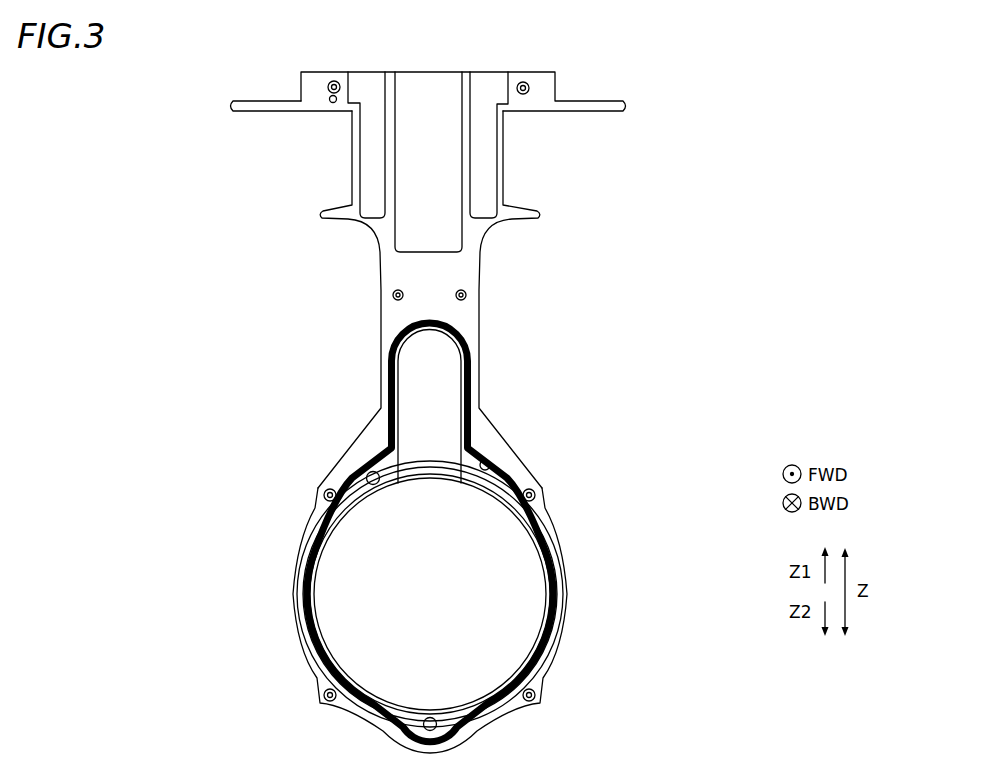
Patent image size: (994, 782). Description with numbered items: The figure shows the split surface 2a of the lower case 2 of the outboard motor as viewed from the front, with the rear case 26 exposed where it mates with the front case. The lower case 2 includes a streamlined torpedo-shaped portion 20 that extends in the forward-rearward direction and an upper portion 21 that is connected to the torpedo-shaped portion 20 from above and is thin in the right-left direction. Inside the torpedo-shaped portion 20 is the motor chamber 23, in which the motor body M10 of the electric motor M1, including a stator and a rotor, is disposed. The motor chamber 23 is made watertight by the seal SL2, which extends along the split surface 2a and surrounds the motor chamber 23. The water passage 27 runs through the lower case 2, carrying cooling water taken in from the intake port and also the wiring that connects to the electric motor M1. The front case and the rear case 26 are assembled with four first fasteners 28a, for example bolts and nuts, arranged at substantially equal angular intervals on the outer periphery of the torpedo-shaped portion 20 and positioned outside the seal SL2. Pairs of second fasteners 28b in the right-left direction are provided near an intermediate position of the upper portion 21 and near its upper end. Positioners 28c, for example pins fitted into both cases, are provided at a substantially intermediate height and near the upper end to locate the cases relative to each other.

The lower case 2 is at (199, 44).
The split surface 2a is at (470, 258).
The rear case 26 is at (250, 88).
The water passage 27 is at (414, 82).
The first fasteners 28a is at (324, 491).
The second fasteners 28b is at (330, 93).
The positioners 28c is at (330, 103).
The upper portion 21 is at (486, 355).
The seal SL2 is at (473, 419).
The torpedo-shaped portion 20 is at (576, 652).
The motor chamber 23 is at (556, 586).
The electric motor M1 is at (551, 524).
The motor body M10 is at (527, 555).